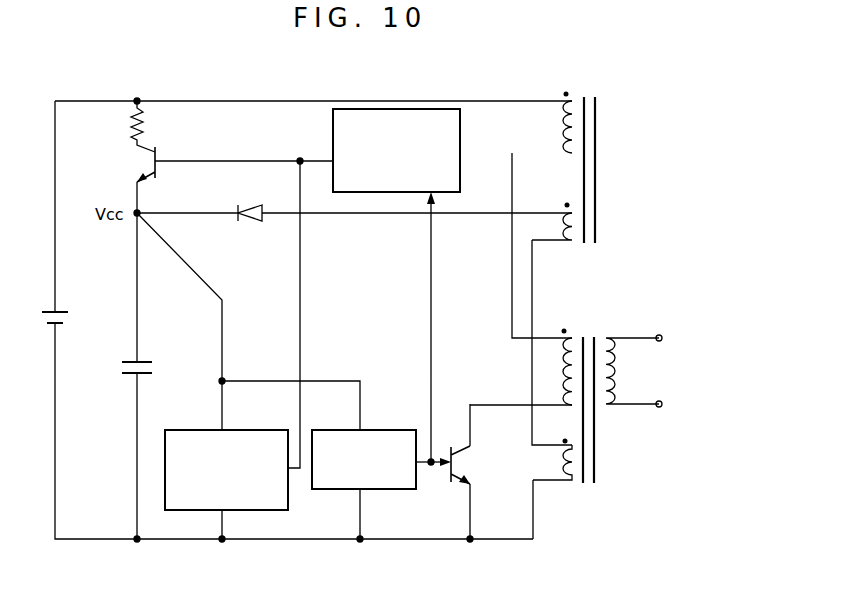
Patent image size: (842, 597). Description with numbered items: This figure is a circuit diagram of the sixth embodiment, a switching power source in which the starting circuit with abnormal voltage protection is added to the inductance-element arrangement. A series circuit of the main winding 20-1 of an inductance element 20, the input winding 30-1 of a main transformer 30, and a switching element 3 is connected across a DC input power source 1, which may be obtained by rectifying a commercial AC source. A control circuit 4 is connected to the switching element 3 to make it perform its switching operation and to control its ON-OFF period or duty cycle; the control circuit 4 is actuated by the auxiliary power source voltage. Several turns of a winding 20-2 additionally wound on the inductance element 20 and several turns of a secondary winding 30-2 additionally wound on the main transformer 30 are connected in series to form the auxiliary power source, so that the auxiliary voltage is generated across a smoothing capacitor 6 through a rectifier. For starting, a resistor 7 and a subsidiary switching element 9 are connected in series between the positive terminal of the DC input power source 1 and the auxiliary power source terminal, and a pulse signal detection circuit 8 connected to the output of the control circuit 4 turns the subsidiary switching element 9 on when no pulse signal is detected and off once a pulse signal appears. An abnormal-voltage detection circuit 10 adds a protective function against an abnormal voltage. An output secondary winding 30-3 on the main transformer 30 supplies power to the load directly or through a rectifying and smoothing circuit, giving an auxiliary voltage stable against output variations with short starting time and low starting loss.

The DC input power source 1 is at (68, 318).
The switching element 3 is at (466, 462).
The control circuit 4 is at (400, 489).
The smoothing capacitor 6 is at (155, 368).
The resistor 7 is at (147, 118).
The pulse signal detection circuit 8 is at (460, 117).
The subsidiary switching element 9 is at (146, 161).
The abnormal-voltage detection circuit 10 is at (288, 504).
The inductance element 20 is at (592, 93).
The main winding 20-1 is at (562, 112).
The winding 20-2 is at (570, 243).
The main transformer 30 is at (590, 485).
The input winding 30-1 is at (544, 336).
The secondary winding 30-2 is at (566, 482).
The output secondary winding 30-3 is at (612, 406).